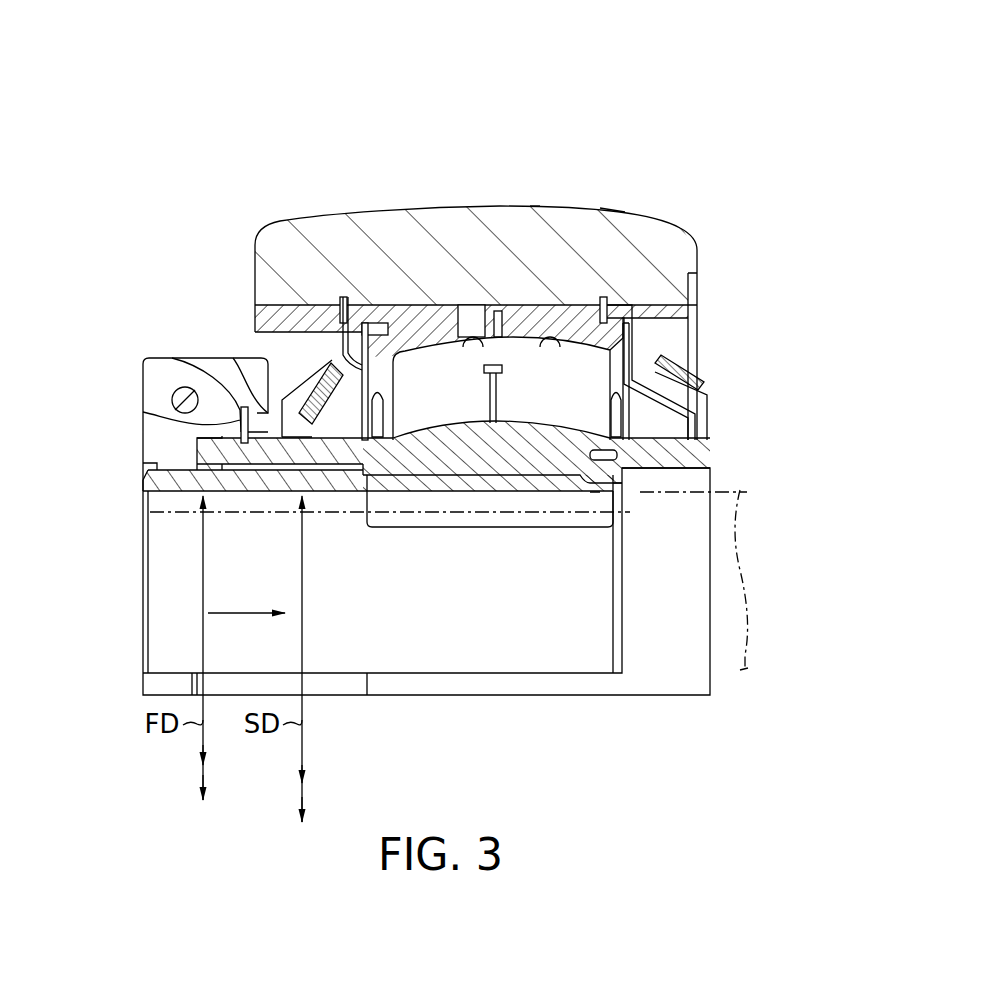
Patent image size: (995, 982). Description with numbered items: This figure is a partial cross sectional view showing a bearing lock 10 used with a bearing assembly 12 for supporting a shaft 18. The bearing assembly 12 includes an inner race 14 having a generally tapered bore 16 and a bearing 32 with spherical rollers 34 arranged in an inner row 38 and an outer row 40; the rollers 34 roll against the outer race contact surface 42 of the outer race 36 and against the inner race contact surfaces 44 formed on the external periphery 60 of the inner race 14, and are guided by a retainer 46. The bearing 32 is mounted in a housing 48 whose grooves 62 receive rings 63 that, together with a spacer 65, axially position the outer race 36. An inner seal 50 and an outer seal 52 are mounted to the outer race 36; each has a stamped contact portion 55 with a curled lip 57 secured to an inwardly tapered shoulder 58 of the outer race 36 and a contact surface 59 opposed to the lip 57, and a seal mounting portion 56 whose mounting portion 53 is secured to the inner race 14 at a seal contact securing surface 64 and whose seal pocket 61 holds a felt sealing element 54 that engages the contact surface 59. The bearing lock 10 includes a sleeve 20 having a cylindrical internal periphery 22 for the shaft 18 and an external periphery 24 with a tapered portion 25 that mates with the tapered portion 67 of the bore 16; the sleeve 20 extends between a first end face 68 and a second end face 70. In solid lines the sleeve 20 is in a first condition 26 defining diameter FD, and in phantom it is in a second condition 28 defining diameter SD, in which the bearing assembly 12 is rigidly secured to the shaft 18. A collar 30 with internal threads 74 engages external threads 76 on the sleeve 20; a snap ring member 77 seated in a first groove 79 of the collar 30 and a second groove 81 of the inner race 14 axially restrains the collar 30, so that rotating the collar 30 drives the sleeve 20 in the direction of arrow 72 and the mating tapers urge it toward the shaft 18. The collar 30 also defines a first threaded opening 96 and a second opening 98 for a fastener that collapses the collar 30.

The bearing lock 10 is at (208, 88).
The bearing assembly 12 is at (310, 122).
The inner race 14 is at (710, 452).
The bore 16 is at (615, 492).
The shaft 18 is at (740, 490).
The sleeve 20 is at (338, 496).
The internal periphery 22 is at (527, 493).
The external periphery 24 is at (399, 455).
The tapered portion 25 is at (532, 437).
The first condition 26 is at (220, 496).
The second condition 28 is at (316, 505).
The collar 30 is at (232, 357).
The bearing 32 is at (577, 238).
The spherical rollers 34 is at (557, 352).
The outer race 36 is at (405, 302).
The inner row 38 is at (537, 165).
The outer row 40 is at (437, 150).
The outer race contact surface 42 is at (466, 303).
The inner race contact surfaces 44 is at (492, 423).
The retainer 46 is at (553, 350).
The housing 48 is at (612, 213).
The inner seal 50 is at (646, 357).
The outer seal 52 is at (307, 362).
The mounting portion 53 is at (707, 428).
The sealing element 54 is at (305, 395).
The contact portion 55 is at (355, 325).
The seal mounting portion 56 is at (277, 407).
The lip 57 is at (640, 300).
The inwardly tapered shoulder 58 is at (650, 335).
The contact surface 59 is at (395, 302).
The external periphery 60 is at (407, 427).
The seal pocket 61 is at (655, 375).
The grooves 62 is at (337, 290).
The rings 63 is at (333, 284).
The seal contact securing surface 64 is at (330, 432).
The spacer 65 is at (365, 302).
The tapered portion 67 is at (486, 530).
The first end face 68 is at (143, 483).
The second end face 70 is at (633, 482).
The arrow 72 is at (244, 613).
The internal threads 74 is at (168, 477).
The external threads 76 is at (143, 465).
The member 77 is at (183, 387).
The first groove 79 is at (143, 412).
The second groove 81 is at (222, 446).
The first threaded opening 96 is at (167, 392).
The second opening 98 is at (150, 358).